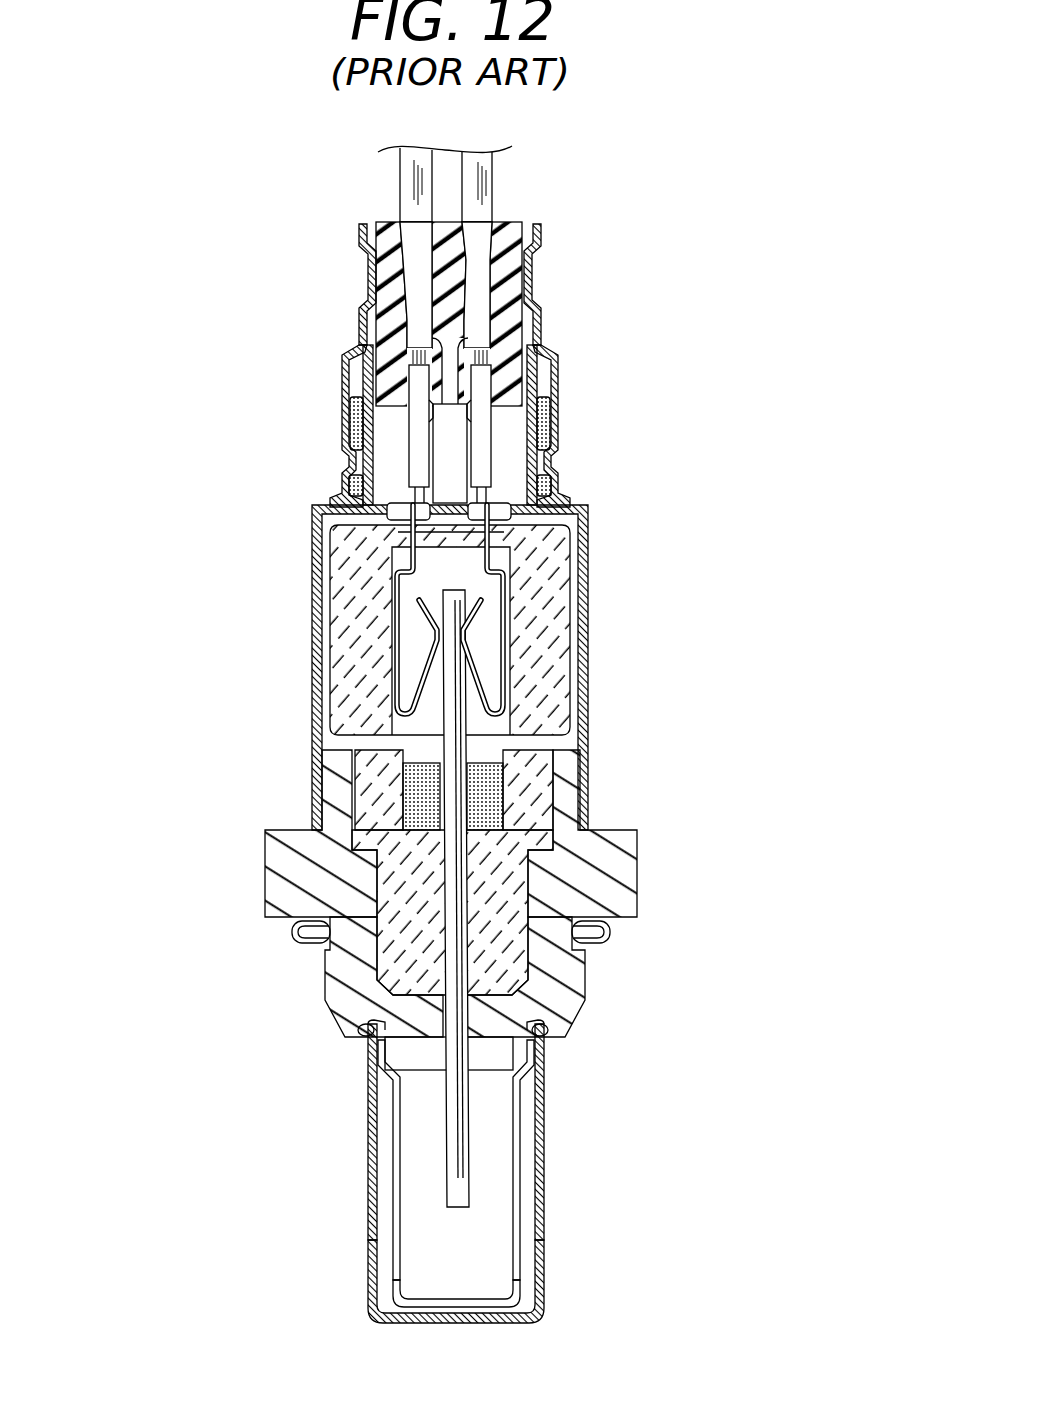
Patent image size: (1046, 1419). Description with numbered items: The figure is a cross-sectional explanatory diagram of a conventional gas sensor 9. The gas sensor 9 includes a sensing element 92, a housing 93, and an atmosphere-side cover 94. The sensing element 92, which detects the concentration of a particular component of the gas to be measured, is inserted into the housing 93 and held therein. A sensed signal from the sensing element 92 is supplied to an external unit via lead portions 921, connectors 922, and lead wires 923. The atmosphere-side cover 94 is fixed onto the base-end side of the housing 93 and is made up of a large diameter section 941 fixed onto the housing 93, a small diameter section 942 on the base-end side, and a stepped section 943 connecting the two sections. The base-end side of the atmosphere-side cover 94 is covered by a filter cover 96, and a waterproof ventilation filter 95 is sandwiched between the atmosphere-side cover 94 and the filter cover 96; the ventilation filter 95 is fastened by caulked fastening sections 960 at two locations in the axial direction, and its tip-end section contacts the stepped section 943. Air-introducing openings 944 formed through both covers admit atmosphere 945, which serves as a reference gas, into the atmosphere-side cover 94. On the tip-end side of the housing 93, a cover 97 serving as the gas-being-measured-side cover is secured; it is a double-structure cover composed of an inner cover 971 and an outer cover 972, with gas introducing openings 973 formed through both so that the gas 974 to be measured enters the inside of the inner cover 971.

The gas sensor 9 is at (652, 396).
The sensing element 92 is at (455, 1158).
The lead portions 921 is at (513, 623).
The connectors 922 is at (553, 453).
The lead wires 923 is at (412, 177).
The housing 93 is at (613, 872).
The atmosphere-side cover 94 is at (588, 650).
The large diameter section 941 is at (313, 680).
The small diameter section 942 is at (362, 385).
The stepped section 943 is at (332, 500).
The air-introducing openings 944 is at (345, 418).
The atmosphere 945 is at (345, 445).
The waterproof ventilation filter 95 is at (556, 420).
The filter cover 96 is at (365, 306).
The fastening sections 960 is at (549, 393).
The cover 97 is at (272, 1137).
The inner cover 971 is at (393, 1162).
The outer cover 972 is at (370, 1220).
The gas introducing openings 973 is at (373, 1267).
The gas to be measured 974 is at (475, 1250).